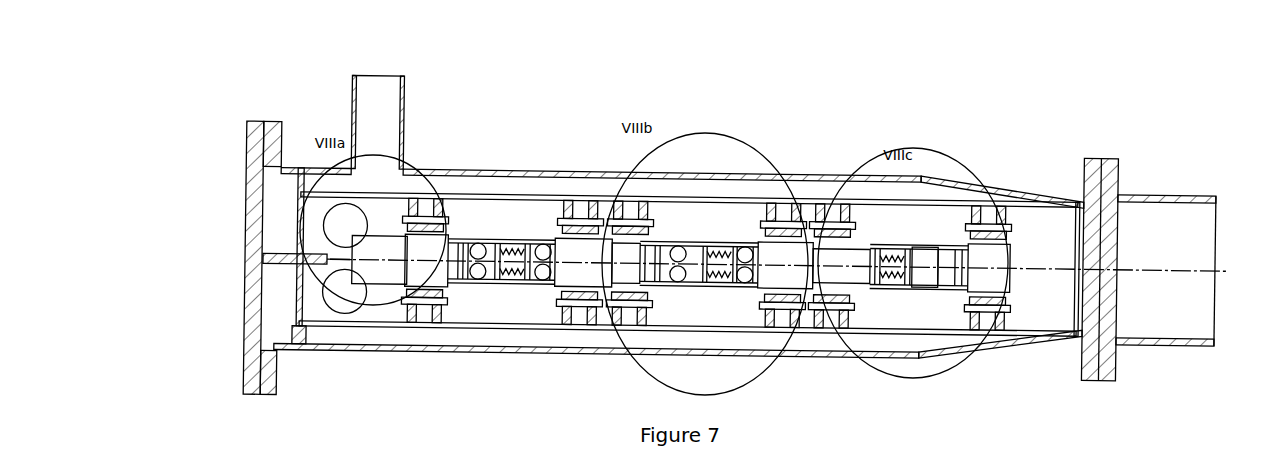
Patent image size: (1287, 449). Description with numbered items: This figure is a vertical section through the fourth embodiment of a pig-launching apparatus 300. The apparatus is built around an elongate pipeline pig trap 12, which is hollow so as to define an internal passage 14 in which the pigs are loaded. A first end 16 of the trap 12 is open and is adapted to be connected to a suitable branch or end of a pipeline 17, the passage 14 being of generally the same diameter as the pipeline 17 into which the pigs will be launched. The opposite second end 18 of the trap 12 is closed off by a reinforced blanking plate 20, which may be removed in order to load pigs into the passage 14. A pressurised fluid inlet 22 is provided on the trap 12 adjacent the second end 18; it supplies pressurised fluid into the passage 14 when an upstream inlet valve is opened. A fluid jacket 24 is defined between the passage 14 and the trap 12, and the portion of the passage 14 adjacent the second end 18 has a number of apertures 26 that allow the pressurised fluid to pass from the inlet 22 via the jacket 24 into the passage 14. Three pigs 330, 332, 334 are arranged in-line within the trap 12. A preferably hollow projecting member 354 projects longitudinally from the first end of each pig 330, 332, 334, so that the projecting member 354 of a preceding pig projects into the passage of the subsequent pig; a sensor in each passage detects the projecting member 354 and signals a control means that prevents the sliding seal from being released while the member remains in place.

The pipeline pig trap 12 is at (527, 168).
The internal passage 14 is at (508, 317).
The first end 16 is at (1062, 262).
The pipeline 17 is at (1142, 230).
The second end 18 is at (283, 278).
The reinforced blanking plate 20 is at (250, 328).
The pressurised fluid inlet 22 is at (378, 112).
The fluid jacket 24 is at (479, 178).
The apertures 26 is at (340, 193).
The apparatus 300 is at (575, 157).
The pig 330 is at (912, 300).
The pig 332 is at (705, 298).
The pig 334 is at (495, 292).
The projecting member 354 is at (382, 285).